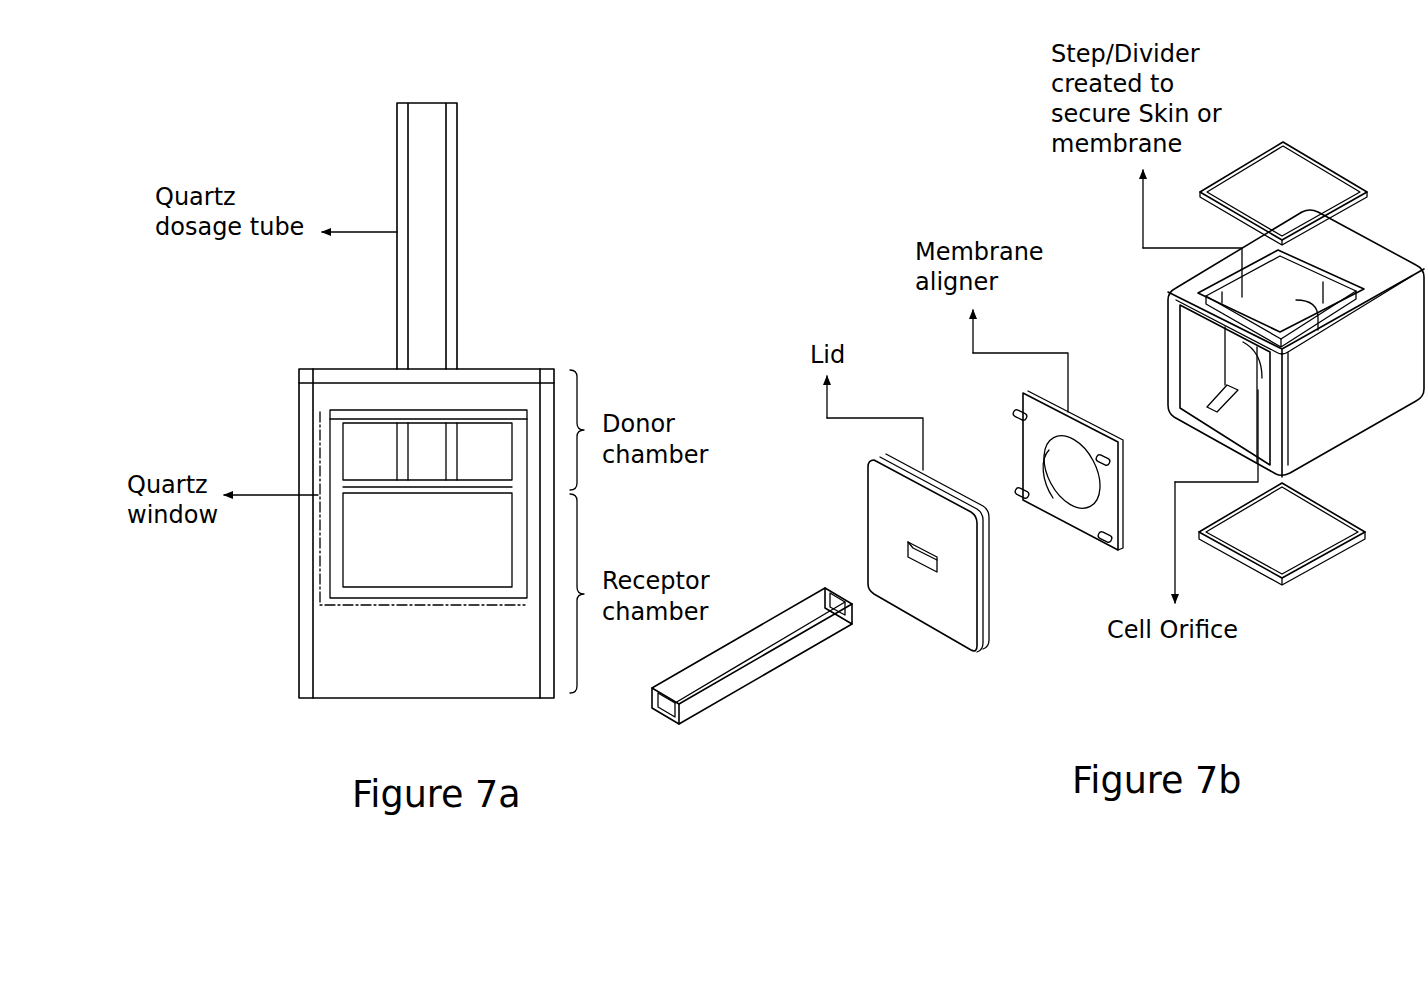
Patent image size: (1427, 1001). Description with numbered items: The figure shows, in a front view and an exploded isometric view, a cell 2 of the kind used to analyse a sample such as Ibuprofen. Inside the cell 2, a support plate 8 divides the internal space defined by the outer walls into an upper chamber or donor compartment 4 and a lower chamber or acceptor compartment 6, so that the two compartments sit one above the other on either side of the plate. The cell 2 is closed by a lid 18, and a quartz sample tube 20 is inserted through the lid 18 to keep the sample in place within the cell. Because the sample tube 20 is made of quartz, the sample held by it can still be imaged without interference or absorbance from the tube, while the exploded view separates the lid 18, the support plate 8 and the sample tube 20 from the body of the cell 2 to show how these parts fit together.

In FIG. 7A, the cell 2 is at (512, 286).
In FIG. 7A, the donor compartment 4 is at (360, 447).
In FIG. 7A, the acceptor compartment 6 is at (372, 543).
In FIG. 7B, the support plate 8 is at (1083, 437).
In FIG. 7A, the lid 18 is at (328, 367).
In FIG. 7B, the lid 18 is at (957, 595).
In FIG. 7A, the quartz sample tube 20 is at (437, 128).
In FIG. 7B, the quartz sample tube 20 is at (769, 648).